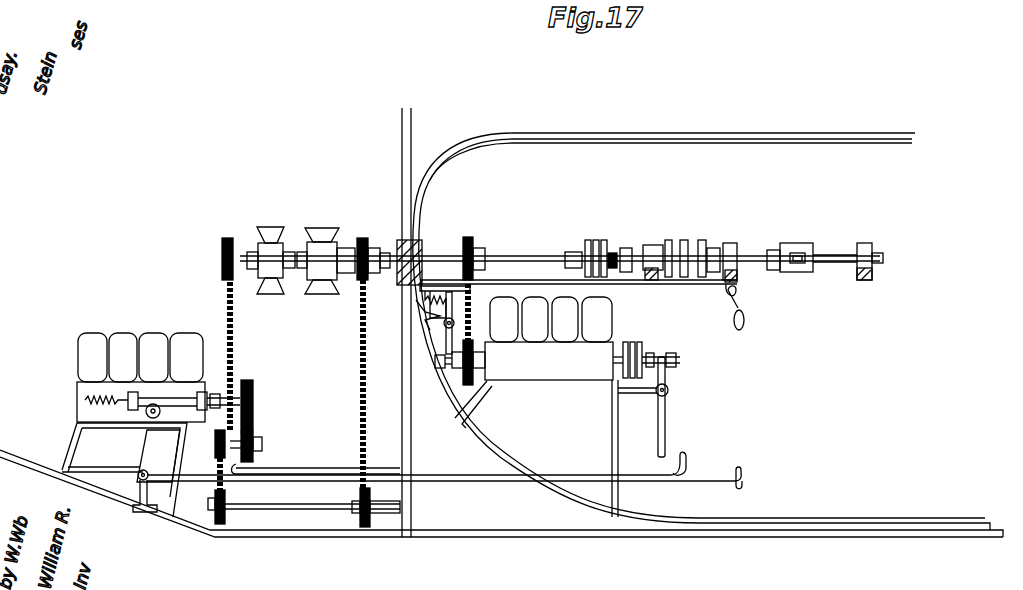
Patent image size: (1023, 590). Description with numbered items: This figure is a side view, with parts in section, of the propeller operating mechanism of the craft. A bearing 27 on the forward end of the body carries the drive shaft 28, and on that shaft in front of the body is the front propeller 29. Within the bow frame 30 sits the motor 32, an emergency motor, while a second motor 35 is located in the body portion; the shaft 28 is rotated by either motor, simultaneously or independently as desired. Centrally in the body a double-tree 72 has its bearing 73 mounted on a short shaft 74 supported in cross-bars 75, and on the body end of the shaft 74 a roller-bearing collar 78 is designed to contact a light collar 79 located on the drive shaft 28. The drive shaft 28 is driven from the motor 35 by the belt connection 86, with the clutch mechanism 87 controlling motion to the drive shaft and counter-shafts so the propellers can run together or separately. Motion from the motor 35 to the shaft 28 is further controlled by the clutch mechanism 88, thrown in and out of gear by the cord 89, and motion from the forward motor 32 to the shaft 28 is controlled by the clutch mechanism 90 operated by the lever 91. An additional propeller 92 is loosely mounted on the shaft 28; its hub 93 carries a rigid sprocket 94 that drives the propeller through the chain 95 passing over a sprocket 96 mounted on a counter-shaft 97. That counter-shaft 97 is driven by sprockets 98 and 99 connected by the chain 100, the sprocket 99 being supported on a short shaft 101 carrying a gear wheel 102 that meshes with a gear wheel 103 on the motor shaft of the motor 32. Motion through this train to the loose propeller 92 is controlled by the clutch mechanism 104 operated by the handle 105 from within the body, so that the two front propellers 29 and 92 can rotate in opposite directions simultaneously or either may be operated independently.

The bearing 27 is at (423, 248).
The shaft 28 is at (532, 256).
The propeller 29 is at (272, 236).
The bow frame 30 is at (125, 506).
The motor 32 is at (78, 392).
The second motor 35 is at (572, 350).
The double-tree 72 is at (803, 272).
The bearing 73 is at (802, 251).
The short shaft 74 is at (833, 256).
The cross-bars 75 is at (718, 310).
The roller-bearing collar 78 is at (724, 243).
The light collar 79 is at (680, 252).
The belt connection 86 is at (471, 245).
The clutch mechanism 87 is at (625, 250).
The clutch mechanism 88 is at (447, 350).
The cord 89 is at (744, 305).
The clutch mechanism 90 is at (220, 348).
The lever 91 is at (743, 471).
The additional propeller 92 is at (323, 228).
The hub 93 is at (348, 274).
The sprocket 94 is at (365, 242).
The chain 95 is at (361, 338).
The sprocket 96 is at (360, 530).
The counter-shaft 97 is at (312, 516).
The sprocket 98 is at (224, 524).
The sprocket 99 is at (156, 471).
The chain 100 is at (147, 455).
The short shaft 101 is at (258, 449).
The gear wheel 102 is at (253, 428).
The gear wheel 103 is at (253, 391).
The clutch mechanism 104 is at (238, 470).
The handle 105 is at (688, 455).